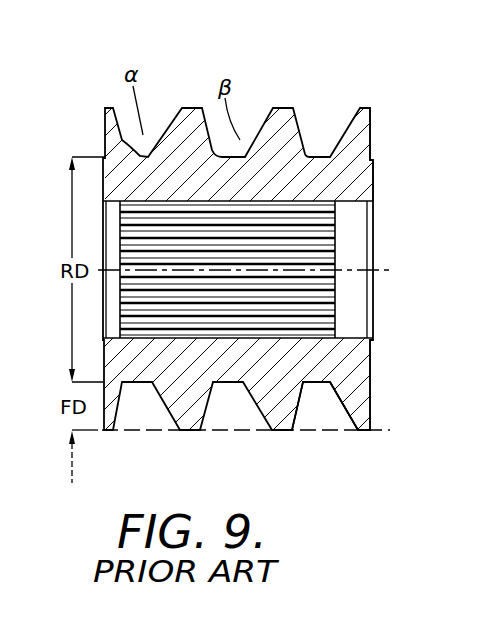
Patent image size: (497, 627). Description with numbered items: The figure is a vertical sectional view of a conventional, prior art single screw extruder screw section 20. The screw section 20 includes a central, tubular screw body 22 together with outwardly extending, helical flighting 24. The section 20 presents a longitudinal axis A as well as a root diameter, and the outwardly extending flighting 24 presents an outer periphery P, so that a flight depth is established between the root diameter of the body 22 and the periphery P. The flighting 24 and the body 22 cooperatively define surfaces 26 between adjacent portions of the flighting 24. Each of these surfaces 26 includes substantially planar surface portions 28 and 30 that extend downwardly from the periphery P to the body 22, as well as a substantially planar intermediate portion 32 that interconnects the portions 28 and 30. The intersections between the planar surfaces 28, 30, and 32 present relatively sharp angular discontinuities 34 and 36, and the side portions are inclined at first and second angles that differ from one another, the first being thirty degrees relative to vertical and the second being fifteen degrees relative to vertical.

The screw section 20 is at (371, 74).
The screw body 22 is at (362, 180).
The helical flighting 24 is at (360, 145).
The surfaces 26 is at (327, 443).
The planar surface portion 28 is at (302, 412).
The planar surface portion 30 is at (350, 428).
The intermediate portion 32 is at (330, 364).
The angular discontinuity 34 is at (312, 383).
The angular discontinuity 36 is at (338, 430).
The longitudinal axis A is at (378, 270).
The outer periphery P is at (378, 430).